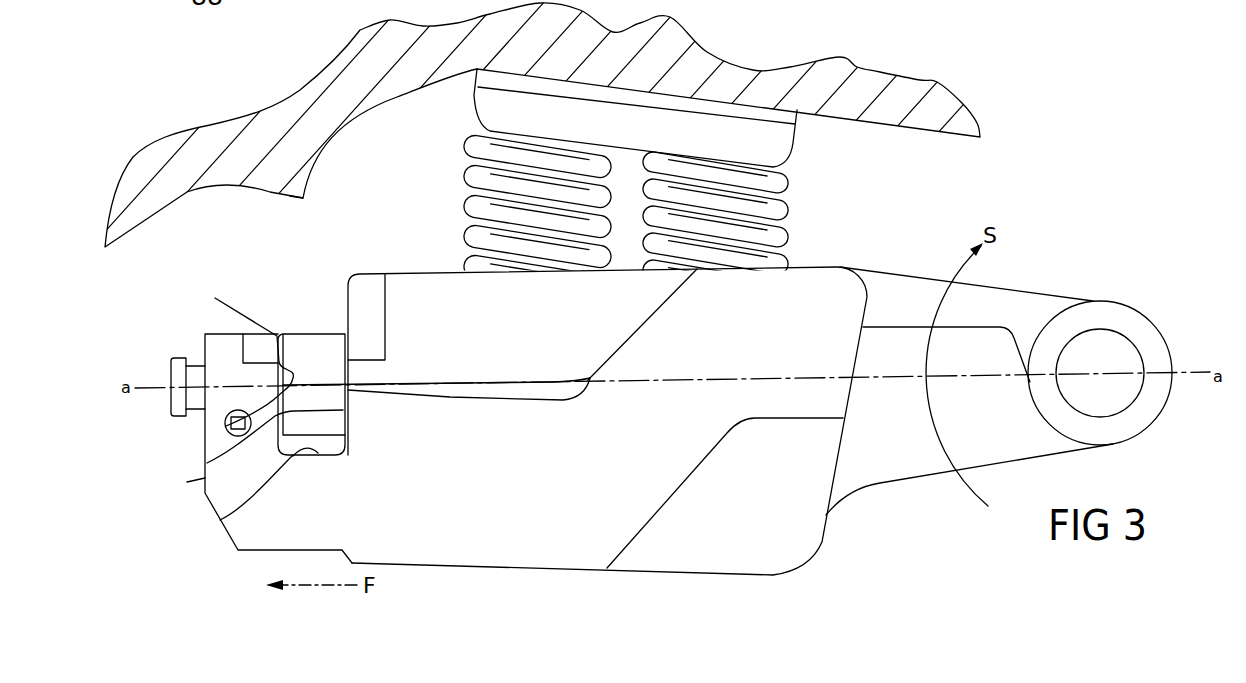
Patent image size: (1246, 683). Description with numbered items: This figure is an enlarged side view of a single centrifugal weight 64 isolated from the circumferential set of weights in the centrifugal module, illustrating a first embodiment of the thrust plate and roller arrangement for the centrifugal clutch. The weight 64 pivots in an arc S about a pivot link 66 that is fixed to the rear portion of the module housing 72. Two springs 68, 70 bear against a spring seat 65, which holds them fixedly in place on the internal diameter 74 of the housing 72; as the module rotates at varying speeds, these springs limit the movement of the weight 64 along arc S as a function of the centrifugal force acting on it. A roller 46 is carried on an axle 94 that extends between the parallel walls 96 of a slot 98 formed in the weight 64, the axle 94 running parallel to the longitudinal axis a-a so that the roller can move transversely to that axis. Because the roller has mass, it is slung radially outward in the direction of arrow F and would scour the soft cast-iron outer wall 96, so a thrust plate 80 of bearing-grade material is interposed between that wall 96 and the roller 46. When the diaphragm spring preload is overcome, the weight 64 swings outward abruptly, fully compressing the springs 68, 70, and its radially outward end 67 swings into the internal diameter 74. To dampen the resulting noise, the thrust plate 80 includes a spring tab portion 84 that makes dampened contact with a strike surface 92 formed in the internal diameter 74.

The roller 46 is at (308, 342).
The centrifugal weight 64 is at (414, 474).
The spring seat 65 is at (777, 140).
The pivot link 66 is at (1123, 353).
The radially outwardly end 67 is at (187, 482).
The spring 68 is at (467, 186).
The spring 70 is at (780, 203).
The module housing 72 is at (672, 58).
The internal diameter 74 is at (125, 236).
The thrust plate 80 is at (207, 463).
The spring tab portion 84 is at (237, 313).
The strike surface 92 is at (285, 198).
The axle 94 is at (172, 360).
The wall 96 is at (225, 423).
The slot 98 is at (220, 520).